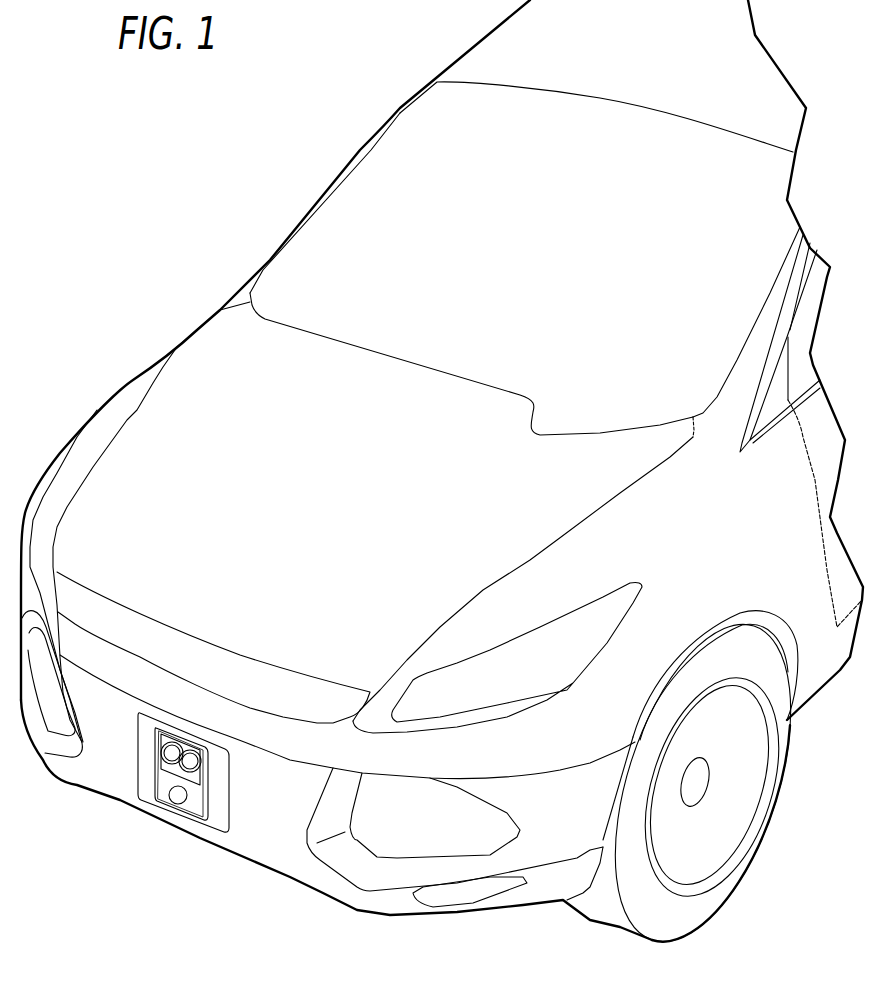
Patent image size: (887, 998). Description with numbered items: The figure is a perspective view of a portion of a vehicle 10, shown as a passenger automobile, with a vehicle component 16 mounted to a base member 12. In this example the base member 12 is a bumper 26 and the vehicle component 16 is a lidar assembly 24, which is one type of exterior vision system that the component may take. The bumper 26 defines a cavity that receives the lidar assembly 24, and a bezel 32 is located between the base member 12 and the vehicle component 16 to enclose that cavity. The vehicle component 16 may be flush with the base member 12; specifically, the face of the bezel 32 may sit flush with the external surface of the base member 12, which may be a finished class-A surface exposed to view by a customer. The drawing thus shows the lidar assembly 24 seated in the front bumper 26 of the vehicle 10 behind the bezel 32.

The vehicle 10 is at (82, 330).
The base member 12 is at (336, 797).
The bumper 26 is at (267, 830).
The vehicle component 16 is at (169, 786).
The lidar assembly 24 is at (169, 786).
The bezel 32 is at (213, 762).